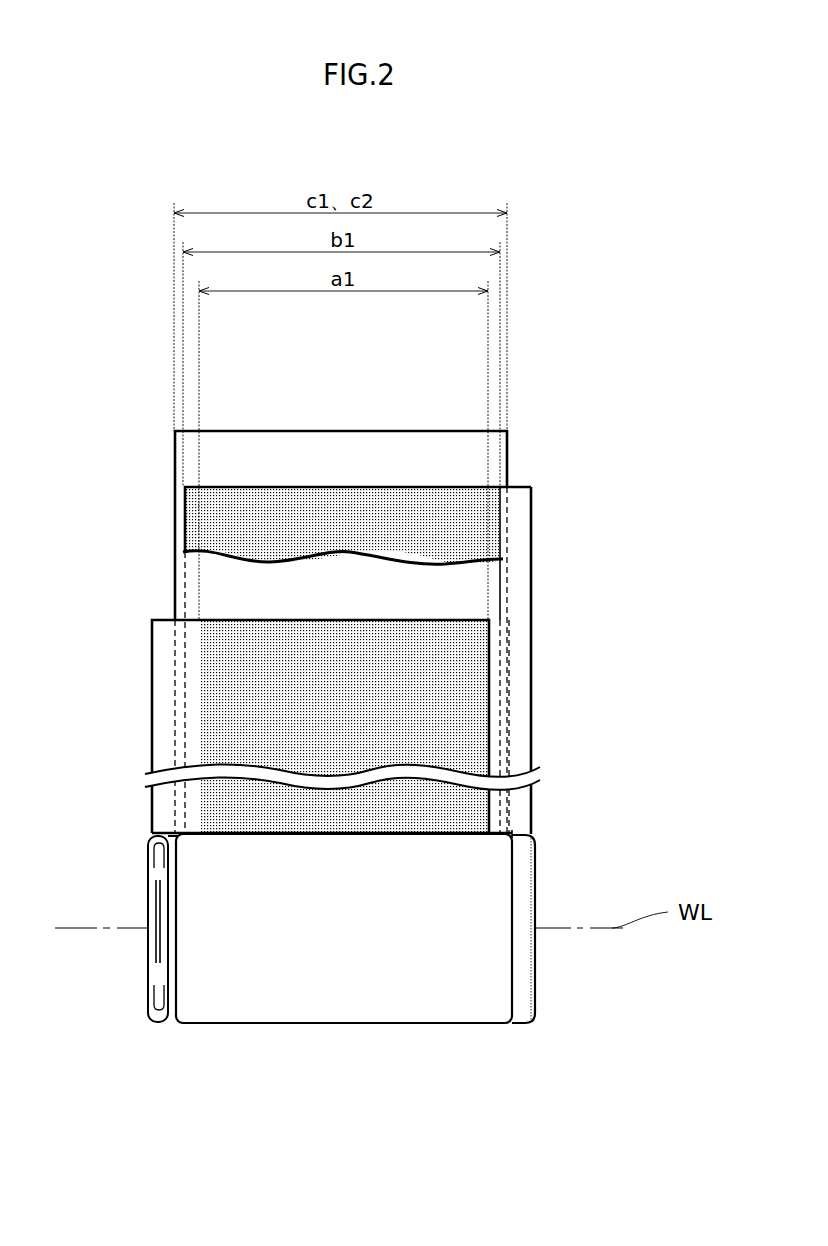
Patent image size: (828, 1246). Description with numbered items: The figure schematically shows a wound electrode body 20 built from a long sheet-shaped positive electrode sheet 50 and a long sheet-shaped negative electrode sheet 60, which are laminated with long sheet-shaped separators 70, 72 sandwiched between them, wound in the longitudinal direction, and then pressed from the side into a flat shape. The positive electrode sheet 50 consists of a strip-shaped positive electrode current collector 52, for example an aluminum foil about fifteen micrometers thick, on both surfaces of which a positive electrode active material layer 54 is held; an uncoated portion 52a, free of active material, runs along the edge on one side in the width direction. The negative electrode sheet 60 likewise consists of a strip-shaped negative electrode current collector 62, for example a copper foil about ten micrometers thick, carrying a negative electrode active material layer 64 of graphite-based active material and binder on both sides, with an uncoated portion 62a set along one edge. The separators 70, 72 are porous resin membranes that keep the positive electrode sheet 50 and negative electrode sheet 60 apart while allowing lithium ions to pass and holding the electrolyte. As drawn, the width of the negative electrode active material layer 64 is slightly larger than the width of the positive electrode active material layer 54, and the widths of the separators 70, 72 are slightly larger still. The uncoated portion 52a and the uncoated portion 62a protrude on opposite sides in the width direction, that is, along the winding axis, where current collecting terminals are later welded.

The wound electrode body 20 is at (377, 997).
The positive electrode sheet 50 is at (272, 800).
The positive electrode current collector 52 is at (347, 603).
The uncoated portion 52a is at (168, 740).
The positive electrode active material layer 54 is at (232, 720).
The negative electrode sheet 60 is at (415, 709).
The negative electrode current collector 62 is at (331, 487).
The uncoated portion 62a is at (515, 545).
The negative electrode active material layer 64 is at (433, 505).
The separator 70 is at (296, 632).
The separator 72 is at (193, 458).